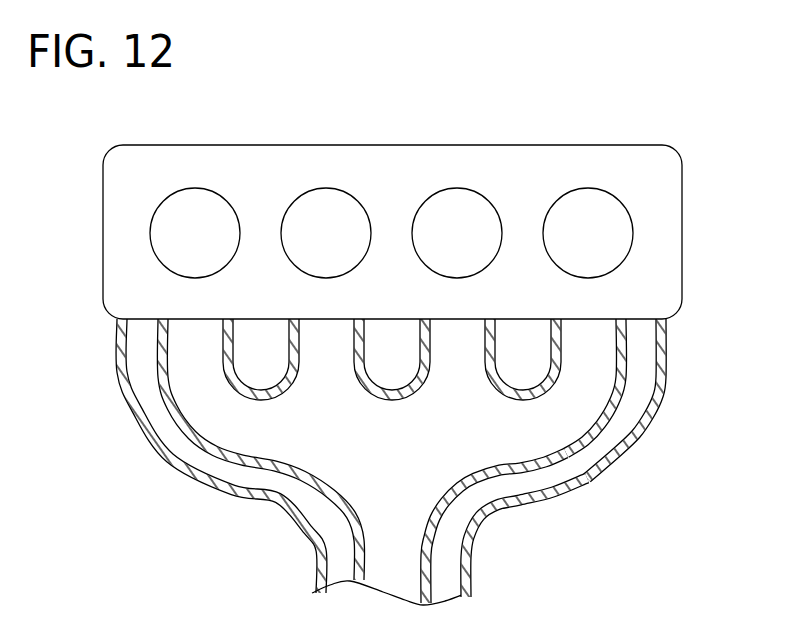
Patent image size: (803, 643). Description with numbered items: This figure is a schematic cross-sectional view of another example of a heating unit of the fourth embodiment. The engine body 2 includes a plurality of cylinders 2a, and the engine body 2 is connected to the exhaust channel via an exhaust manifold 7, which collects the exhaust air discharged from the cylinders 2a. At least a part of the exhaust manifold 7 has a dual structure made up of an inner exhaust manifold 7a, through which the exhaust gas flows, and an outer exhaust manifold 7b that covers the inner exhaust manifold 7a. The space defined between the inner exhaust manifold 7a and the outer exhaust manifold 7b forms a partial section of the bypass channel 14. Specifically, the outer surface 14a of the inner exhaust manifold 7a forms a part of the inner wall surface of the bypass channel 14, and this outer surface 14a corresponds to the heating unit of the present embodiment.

The engine body 2 is at (721, 165).
The cylinder 2a is at (605, 248).
The exhaust manifold 7 is at (664, 423).
The inner exhaust manifold 7a is at (550, 462).
The outer exhaust manifold 7b is at (590, 485).
The bypass channel 14 is at (537, 493).
The outer surface of the inner exhaust manifold 14a is at (592, 442).